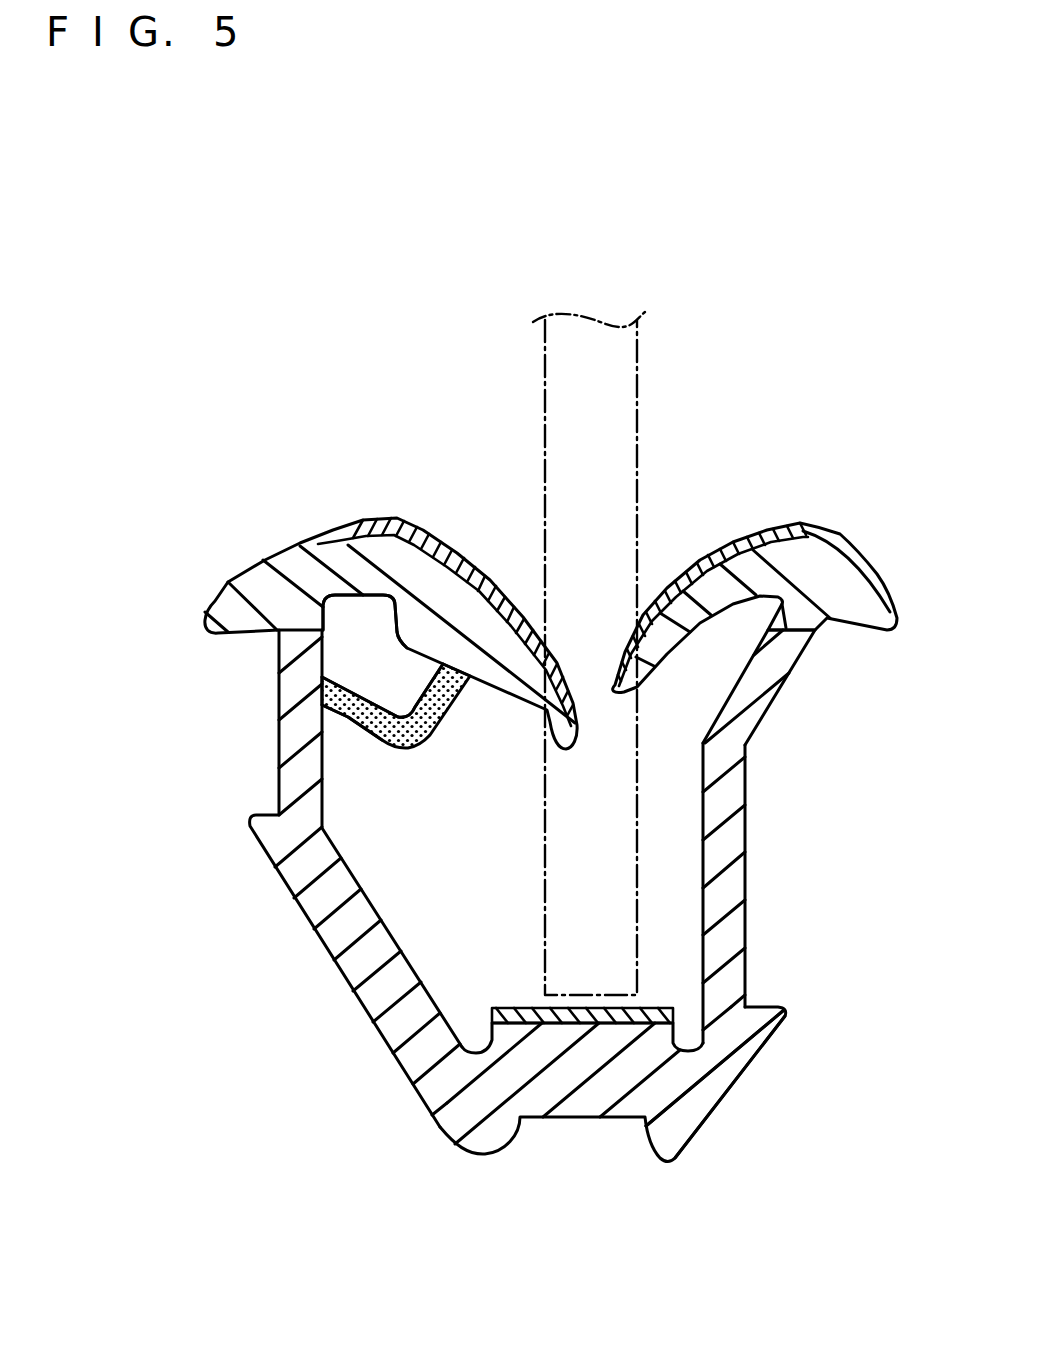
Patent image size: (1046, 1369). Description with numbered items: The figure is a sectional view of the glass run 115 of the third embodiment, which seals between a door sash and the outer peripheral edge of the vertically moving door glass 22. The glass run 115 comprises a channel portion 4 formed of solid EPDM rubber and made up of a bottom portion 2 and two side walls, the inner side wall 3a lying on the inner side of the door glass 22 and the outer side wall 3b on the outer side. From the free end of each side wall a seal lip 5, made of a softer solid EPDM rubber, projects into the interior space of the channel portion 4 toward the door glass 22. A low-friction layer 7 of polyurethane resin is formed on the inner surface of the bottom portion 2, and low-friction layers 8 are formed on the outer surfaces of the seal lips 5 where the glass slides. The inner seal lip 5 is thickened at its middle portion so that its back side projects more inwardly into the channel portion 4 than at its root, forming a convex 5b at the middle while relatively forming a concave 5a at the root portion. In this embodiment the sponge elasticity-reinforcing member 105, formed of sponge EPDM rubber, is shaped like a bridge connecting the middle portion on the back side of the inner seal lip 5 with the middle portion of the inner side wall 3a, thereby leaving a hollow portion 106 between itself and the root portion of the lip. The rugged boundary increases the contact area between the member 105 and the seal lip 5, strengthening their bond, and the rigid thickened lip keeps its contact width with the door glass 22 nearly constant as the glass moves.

The bottom portion 2 is at (594, 1102).
The inner side wall 3a is at (300, 757).
The outer side wall 3b is at (738, 928).
The channel portion 4 is at (730, 793).
The seal lip 5 is at (350, 547).
The concave 5a is at (338, 598).
The convex 5b is at (412, 650).
The low-friction layer 7 is at (510, 1012).
The low-friction layer 8 is at (412, 530).
The door glass 22 is at (637, 375).
The sponge elasticity-reinforcing member 105 is at (347, 703).
The hollow portion 106 is at (420, 672).
The glass run 115 is at (760, 1130).